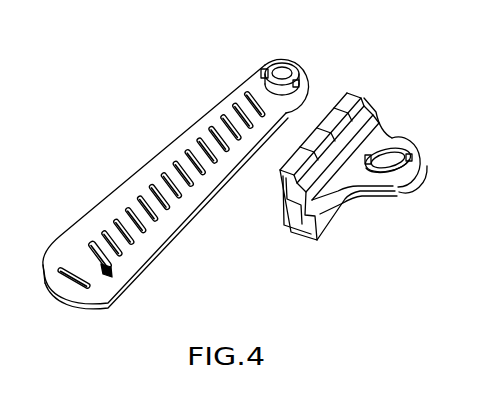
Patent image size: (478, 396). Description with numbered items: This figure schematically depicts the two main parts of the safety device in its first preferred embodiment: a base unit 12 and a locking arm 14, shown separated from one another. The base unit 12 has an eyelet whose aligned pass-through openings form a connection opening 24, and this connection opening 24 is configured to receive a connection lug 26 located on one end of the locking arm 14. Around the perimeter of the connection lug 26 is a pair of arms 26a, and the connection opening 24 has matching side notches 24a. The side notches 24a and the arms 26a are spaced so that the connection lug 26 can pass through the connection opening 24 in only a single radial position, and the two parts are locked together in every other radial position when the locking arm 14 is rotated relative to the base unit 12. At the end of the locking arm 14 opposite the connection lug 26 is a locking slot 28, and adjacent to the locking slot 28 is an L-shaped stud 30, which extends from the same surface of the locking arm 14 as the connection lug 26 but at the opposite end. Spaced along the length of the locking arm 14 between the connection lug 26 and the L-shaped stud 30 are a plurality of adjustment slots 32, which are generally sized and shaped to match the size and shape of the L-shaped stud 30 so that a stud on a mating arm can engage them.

The base unit 12 is at (352, 256).
The locking arm 14 is at (130, 131).
The connection opening 24 is at (398, 148).
The side notches 24a is at (409, 166).
The connection lug 26 is at (288, 63).
The pair of arms 26a is at (264, 68).
The locking slot 28 is at (72, 289).
The L-shaped stud 30 is at (86, 249).
The adjustment slots 32 is at (162, 211).